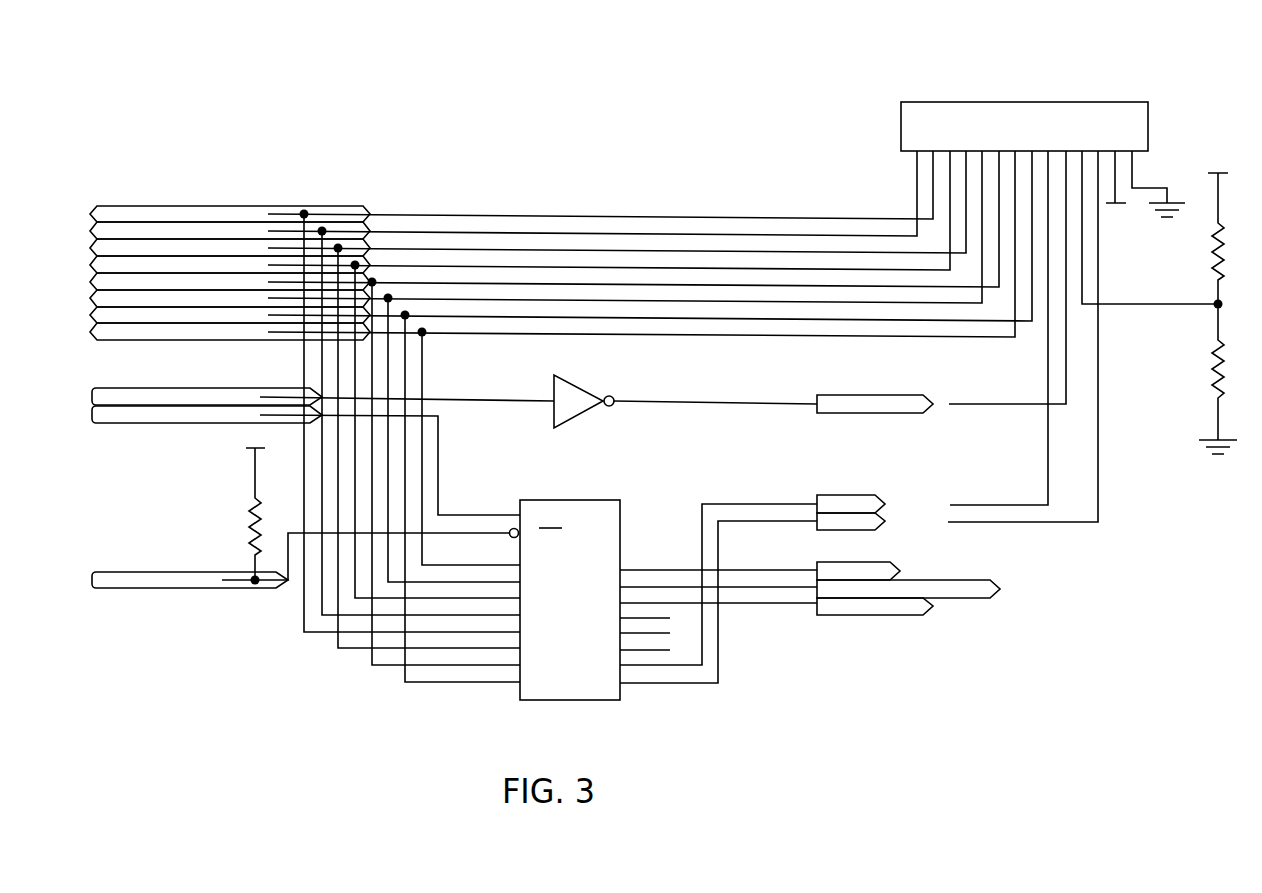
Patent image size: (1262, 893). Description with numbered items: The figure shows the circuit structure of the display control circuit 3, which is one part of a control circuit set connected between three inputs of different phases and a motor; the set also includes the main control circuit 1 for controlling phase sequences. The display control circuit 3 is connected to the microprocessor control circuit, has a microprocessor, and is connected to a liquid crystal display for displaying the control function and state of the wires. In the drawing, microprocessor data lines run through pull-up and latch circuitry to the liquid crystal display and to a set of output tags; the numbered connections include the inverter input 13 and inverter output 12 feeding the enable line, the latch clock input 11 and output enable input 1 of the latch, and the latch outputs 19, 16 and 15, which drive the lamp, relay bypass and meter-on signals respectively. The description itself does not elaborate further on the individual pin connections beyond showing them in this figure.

The display control circuit 3 is at (415, 110).
The inverter input pin 13 is at (407, 390).
The inverter output pin 12 is at (715, 391).
The latch clock pin 11 is at (390, 465).
The main control circuit 1 is at (370, 547).
The latch output pin 19 is at (718, 561).
The latch output pin 16 is at (718, 578).
The latch output pin 15 is at (718, 594).